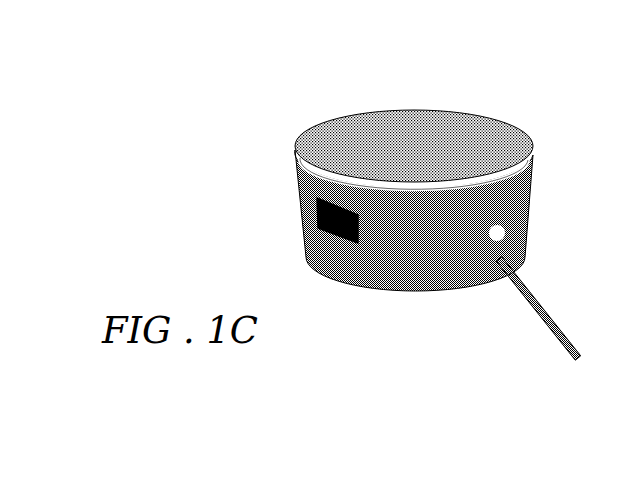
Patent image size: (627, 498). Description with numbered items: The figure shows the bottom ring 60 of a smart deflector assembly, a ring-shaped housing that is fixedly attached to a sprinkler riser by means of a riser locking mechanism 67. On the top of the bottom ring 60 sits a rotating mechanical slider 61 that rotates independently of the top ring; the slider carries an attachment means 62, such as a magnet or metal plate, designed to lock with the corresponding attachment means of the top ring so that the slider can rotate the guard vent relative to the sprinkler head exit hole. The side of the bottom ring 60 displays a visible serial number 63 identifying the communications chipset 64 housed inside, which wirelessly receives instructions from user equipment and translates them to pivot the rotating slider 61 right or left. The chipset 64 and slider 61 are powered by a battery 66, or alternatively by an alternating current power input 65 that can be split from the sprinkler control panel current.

The bottom ring 60 is at (281, 127).
The rotating mechanical slider 61 is at (413, 111).
The attachment means 62 is at (403, 182).
The visible serial number 63 is at (311, 227).
The communications chipset 64 is at (387, 272).
The power input 65 is at (523, 292).
The battery 66 is at (314, 250).
The riser locking mechanism 67 is at (505, 234).